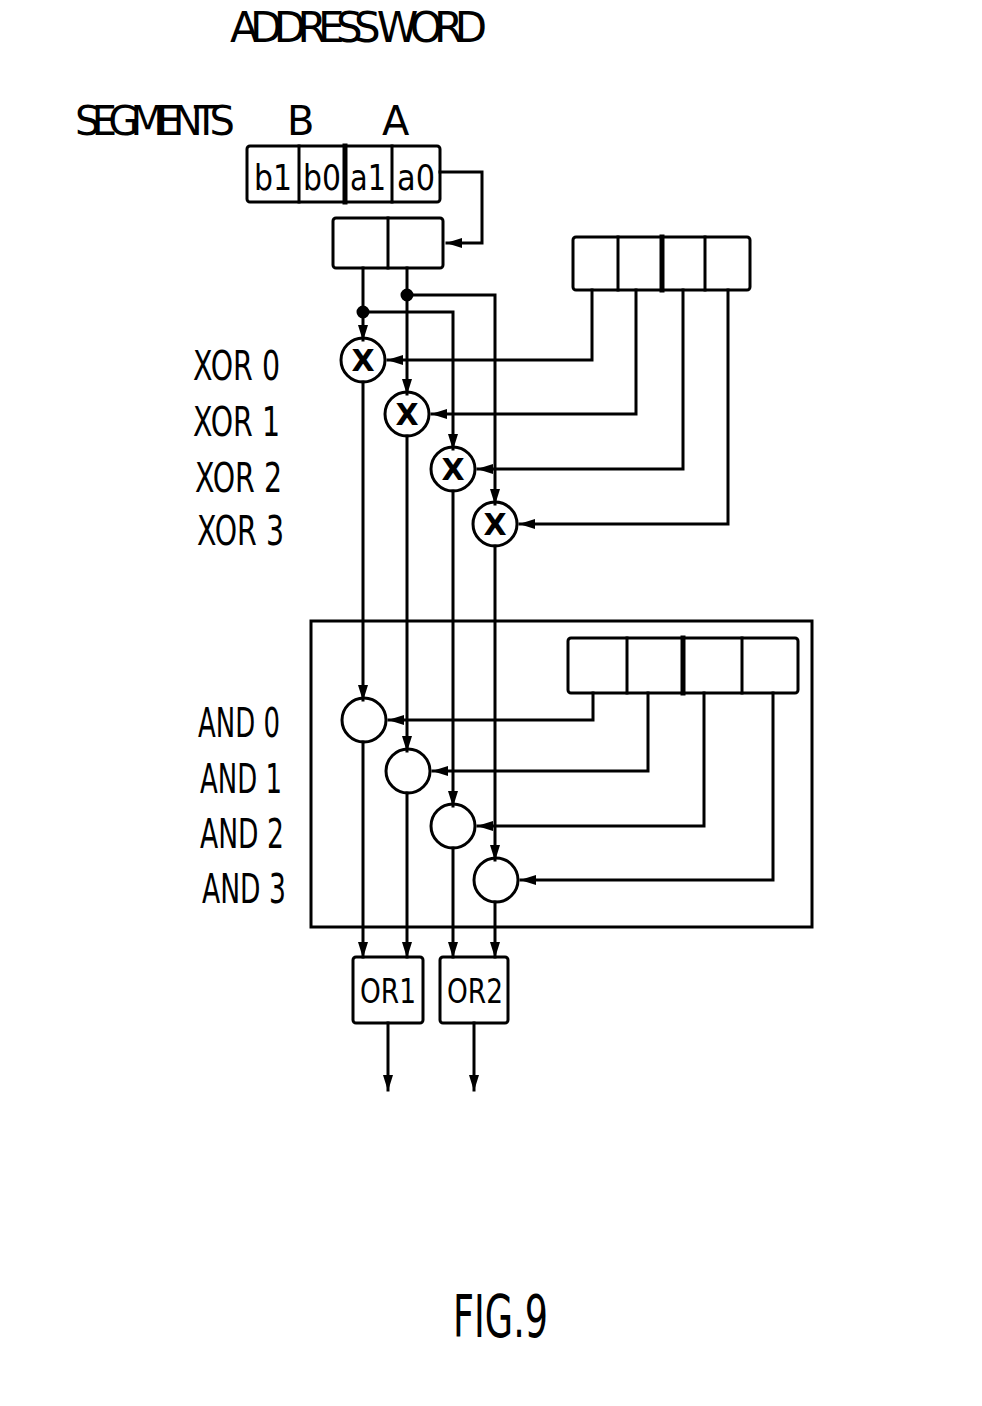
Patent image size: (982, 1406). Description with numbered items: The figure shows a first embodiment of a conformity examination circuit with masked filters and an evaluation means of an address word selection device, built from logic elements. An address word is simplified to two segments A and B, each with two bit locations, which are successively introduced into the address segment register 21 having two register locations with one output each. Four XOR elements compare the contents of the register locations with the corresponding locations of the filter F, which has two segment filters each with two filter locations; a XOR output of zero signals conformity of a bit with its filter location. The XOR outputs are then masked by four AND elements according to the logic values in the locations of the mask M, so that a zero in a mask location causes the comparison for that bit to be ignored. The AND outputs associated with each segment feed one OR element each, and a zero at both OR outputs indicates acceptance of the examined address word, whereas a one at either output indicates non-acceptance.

The address segment register 21 is at (333, 268).
The filter F is at (752, 224).
The mask M is at (811, 614).